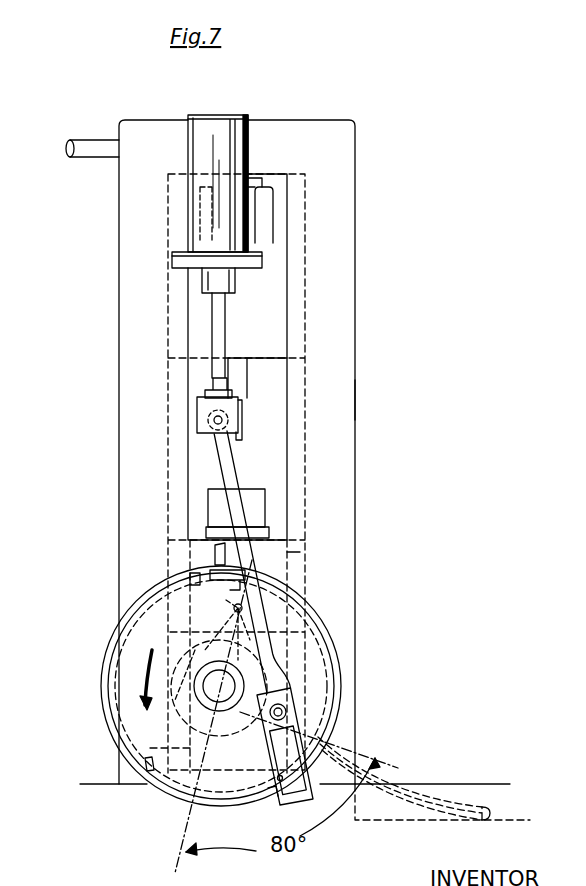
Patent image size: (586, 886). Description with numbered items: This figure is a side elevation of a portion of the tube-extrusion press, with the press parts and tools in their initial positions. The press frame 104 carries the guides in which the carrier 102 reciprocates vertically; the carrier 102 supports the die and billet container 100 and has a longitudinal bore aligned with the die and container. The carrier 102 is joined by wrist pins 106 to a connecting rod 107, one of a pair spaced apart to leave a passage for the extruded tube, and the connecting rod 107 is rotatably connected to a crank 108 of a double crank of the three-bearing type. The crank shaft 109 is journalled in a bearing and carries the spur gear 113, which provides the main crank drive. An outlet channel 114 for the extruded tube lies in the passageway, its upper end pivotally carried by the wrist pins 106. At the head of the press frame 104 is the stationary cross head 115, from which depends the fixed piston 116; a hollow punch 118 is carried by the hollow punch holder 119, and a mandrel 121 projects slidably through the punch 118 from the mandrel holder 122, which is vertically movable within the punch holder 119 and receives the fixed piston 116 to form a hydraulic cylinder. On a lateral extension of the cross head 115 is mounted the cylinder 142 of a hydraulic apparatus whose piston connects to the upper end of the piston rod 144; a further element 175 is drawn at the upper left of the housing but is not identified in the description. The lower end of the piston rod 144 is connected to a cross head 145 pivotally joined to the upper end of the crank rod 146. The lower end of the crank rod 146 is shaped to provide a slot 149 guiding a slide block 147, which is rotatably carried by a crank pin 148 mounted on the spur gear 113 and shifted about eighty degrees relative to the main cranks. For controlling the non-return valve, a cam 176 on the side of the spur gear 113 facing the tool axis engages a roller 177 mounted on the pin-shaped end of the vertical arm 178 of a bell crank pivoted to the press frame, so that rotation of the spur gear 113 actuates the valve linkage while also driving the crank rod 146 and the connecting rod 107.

The inlet pipe 175 is at (92, 139).
The stationary cross head 115 is at (313, 124).
The fixed piston 116 is at (254, 181).
The cylinder 142 is at (214, 226).
The mandrel holder 122 is at (262, 223).
The piston rod 144 is at (218, 318).
The hollow punch holder 119 is at (272, 324).
The hollow punch 118 is at (240, 375).
The press frame 104 is at (356, 402).
The cross head 145 is at (206, 409).
The mandrel 121 is at (244, 432).
The crank rod 146 is at (233, 476).
The die and billet container 100 is at (220, 507).
The vertical arm of the bell crank 178 is at (215, 549).
The roller 177 is at (210, 575).
The wrist pins 106 is at (234, 608).
The connecting rod 107 is at (195, 650).
The spur gear 113 is at (102, 656).
The crank shaft 109 is at (208, 688).
The crank 108 is at (197, 724).
The cam 176 is at (148, 764).
The slide block 147 is at (291, 692).
The crank pin 148 is at (287, 711).
The outlet channel 114 is at (358, 782).
The slot 149 is at (270, 788).
The carrier 102 is at (283, 553).